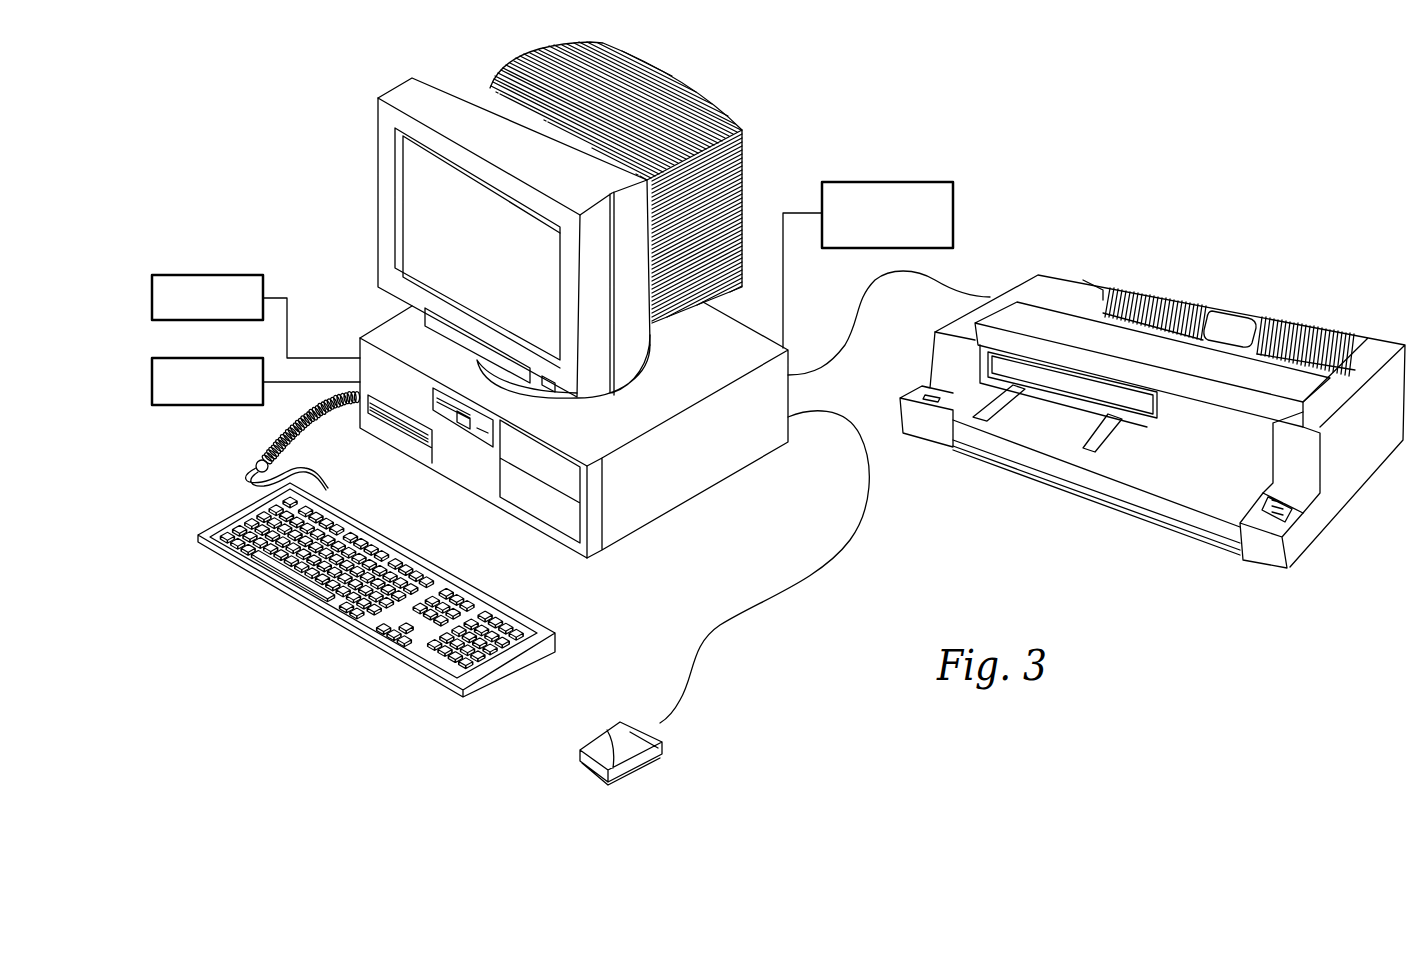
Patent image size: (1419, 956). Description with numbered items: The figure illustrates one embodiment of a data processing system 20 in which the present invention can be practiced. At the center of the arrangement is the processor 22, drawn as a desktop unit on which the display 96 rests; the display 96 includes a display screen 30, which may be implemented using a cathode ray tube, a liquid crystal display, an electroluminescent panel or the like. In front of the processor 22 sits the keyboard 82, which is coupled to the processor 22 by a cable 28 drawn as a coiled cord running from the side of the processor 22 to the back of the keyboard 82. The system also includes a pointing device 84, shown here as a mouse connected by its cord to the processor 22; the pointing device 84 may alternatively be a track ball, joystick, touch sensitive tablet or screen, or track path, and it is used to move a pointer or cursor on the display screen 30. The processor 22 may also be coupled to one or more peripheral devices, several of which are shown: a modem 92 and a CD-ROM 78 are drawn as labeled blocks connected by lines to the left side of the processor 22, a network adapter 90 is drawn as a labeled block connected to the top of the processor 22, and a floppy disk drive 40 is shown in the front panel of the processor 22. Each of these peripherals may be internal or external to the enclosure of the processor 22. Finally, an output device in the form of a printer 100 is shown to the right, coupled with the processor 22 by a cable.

The data processing system 20 is at (942, 87).
The processor 22 is at (592, 572).
The cable 28 is at (278, 438).
The display screen 30 is at (497, 260).
The floppy disk drive 40 is at (463, 420).
The CD-ROM 78 is at (200, 358).
The keyboard 82 is at (350, 636).
The pointing device 84 is at (657, 758).
The network adapter 90 is at (953, 192).
The modem 92 is at (200, 275).
The display 96 is at (368, 180).
The printer 100 is at (1105, 265).